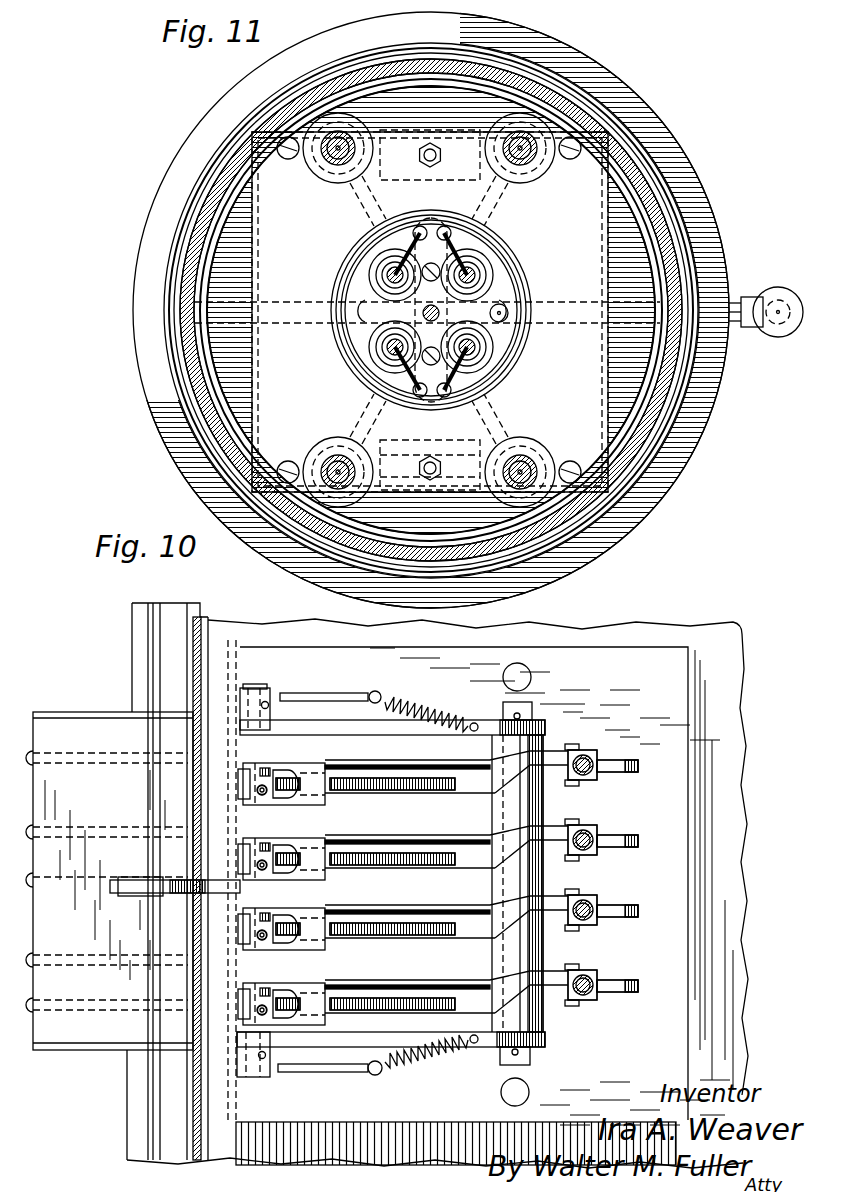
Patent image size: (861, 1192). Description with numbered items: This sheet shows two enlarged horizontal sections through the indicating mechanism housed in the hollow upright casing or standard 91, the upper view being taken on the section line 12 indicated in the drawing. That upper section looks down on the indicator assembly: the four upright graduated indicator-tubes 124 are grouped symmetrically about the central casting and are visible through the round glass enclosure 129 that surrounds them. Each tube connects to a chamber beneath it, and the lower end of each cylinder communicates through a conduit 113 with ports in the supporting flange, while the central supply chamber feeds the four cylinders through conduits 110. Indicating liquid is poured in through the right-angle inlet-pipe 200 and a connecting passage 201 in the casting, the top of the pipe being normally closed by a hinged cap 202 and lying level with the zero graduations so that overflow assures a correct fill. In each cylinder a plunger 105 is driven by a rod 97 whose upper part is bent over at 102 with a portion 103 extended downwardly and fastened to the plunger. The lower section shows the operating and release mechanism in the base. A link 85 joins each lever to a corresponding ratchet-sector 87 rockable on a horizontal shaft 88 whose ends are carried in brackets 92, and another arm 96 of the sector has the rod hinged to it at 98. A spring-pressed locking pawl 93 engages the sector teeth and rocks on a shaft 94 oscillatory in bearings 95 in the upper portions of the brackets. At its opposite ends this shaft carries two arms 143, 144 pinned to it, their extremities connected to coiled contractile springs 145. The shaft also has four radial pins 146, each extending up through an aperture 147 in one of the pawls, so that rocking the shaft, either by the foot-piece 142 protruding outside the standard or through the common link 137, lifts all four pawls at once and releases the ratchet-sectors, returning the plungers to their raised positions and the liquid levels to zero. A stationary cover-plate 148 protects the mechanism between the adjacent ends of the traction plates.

In FIG. 11, the casing rim 12 is at (330, 118).
In FIG. 11, the glass enclosure 129 is at (668, 240).
In FIG. 11, the inlet-pipe 200 is at (748, 297).
In FIG. 11, the hinged cap 202 is at (777, 337).
In FIG. 11, the indicator-tube 124 is at (525, 155).
In FIG. 11, the conduit 113 is at (366, 222).
In FIG. 11, the rod 97 is at (440, 162).
In FIG. 10, the rod 97 is at (583, 776).
In FIG. 11, the bent-over portion 102 is at (420, 228).
In FIG. 11, the plunger 105 is at (369, 275).
In FIG. 11, the downwardly extended portion 103 is at (380, 290).
In FIG. 11, the conduit 110 is at (443, 310).
In FIG. 11, the connecting passage 201 is at (427, 315).
In FIG. 11, the upright casing 91 is at (605, 345).
In FIG. 10, the upright casing 91 is at (198, 622).
In FIG. 10, the cover-plate 148 is at (85, 1050).
In FIG. 10, the link 137 is at (112, 882).
In FIG. 10, the foot-piece 142 is at (145, 872).
In FIG. 10, the bearing 95 is at (270, 712).
In FIG. 10, the shaft 94 is at (255, 684).
In FIG. 10, the bracket 92 is at (480, 720).
In FIG. 10, the arm 143 is at (342, 693).
In FIG. 10, the arm 144 is at (325, 1072).
In FIG. 10, the spring 145 is at (428, 710).
In FIG. 10, the shaft 88 is at (525, 712).
In FIG. 10, the locking pawl 93 is at (325, 795).
In FIG. 10, the pin 146 is at (266, 795).
In FIG. 10, the aperture 147 is at (298, 792).
In FIG. 10, the link 85 is at (410, 762).
In FIG. 10, the ratchet-sector 87 is at (400, 786).
In FIG. 10, the hinge 98 is at (580, 750).
In FIG. 10, the arm 96 is at (630, 774).